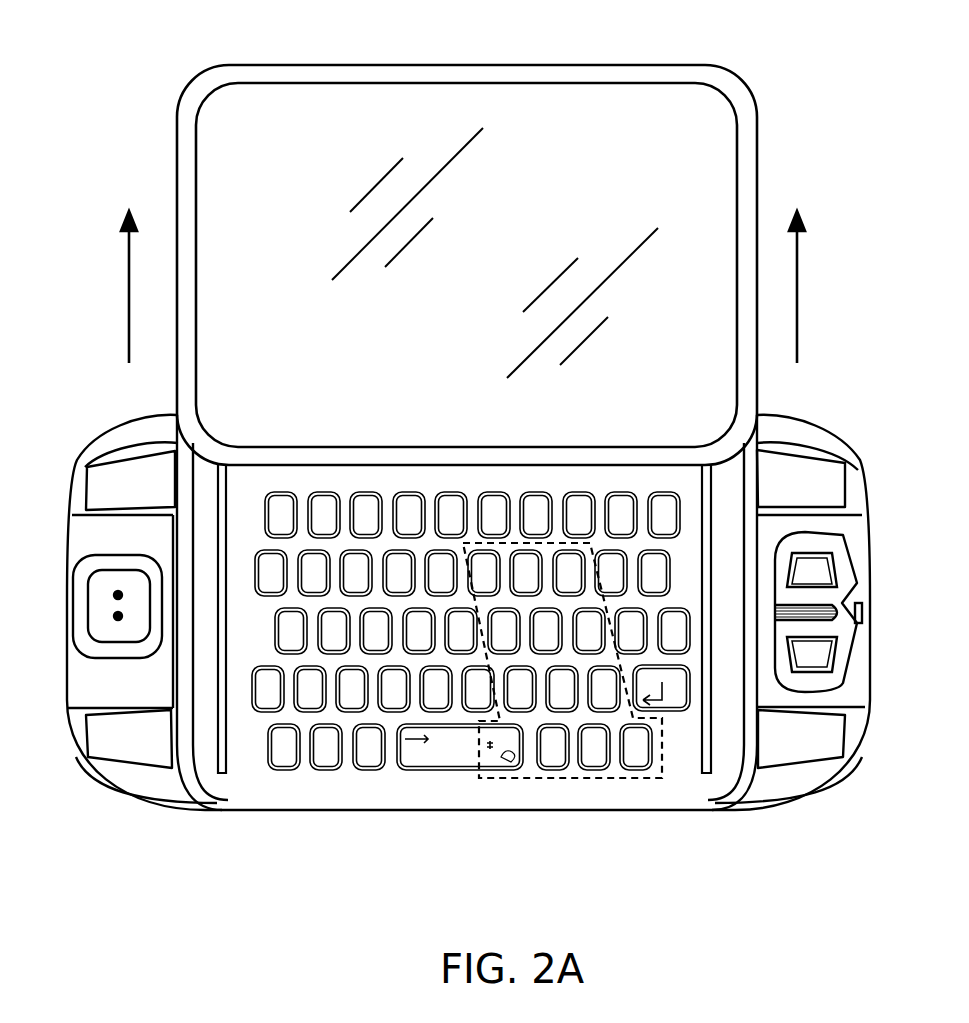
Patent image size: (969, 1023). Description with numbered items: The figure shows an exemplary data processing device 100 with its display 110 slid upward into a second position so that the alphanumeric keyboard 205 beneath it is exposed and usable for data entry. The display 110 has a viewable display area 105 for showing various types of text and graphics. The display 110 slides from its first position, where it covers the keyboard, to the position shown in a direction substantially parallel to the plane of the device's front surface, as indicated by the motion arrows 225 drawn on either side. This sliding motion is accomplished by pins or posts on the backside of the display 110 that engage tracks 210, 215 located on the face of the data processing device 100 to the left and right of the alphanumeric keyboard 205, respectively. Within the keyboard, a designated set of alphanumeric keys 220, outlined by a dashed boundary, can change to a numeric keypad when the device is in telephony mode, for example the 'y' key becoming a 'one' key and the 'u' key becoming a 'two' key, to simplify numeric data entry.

The data processing device 100 is at (120, 36).
The viewable display area 105 is at (345, 390).
The display 110 is at (453, 72).
The alphanumeric keyboard 205 is at (353, 790).
The track 210 is at (222, 775).
The track 215 is at (707, 775).
The designated set of alphanumeric keys 220 is at (542, 778).
The motion arrows 225 is at (129, 276).